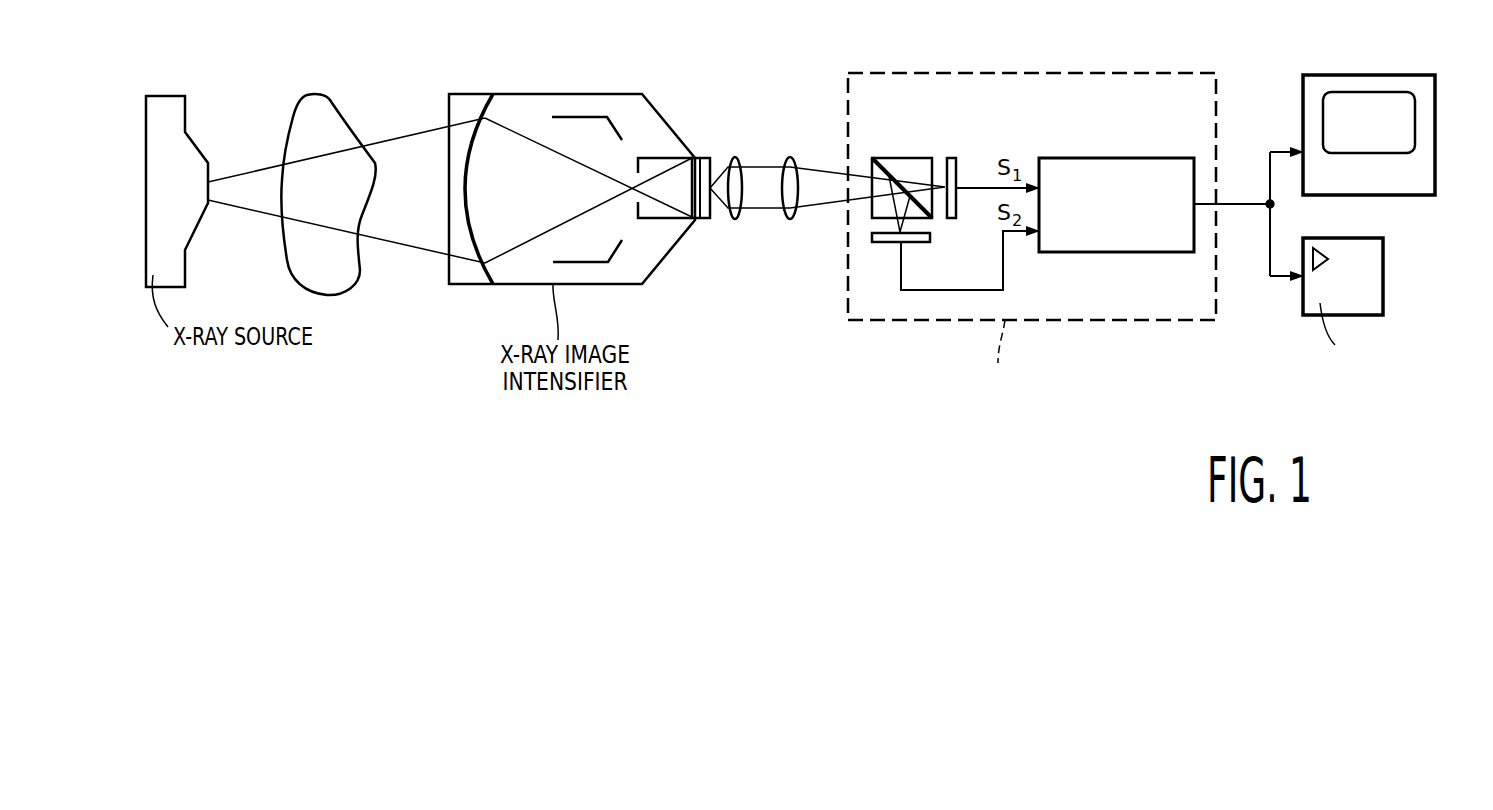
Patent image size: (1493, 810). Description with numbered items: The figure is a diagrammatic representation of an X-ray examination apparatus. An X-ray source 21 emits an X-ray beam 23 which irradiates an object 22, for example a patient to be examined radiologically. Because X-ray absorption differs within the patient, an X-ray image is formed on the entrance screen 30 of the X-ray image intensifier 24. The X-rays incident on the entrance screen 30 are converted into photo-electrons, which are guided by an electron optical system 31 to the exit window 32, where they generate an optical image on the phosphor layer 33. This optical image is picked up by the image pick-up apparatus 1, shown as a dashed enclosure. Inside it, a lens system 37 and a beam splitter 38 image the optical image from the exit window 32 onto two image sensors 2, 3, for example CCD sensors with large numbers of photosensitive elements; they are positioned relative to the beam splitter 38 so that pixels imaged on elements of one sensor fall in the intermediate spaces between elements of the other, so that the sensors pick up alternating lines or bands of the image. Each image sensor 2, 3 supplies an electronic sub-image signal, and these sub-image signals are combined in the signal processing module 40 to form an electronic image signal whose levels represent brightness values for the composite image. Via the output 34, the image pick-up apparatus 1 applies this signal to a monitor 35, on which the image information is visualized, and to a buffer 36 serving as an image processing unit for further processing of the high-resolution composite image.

The image pick-up apparatus 1 is at (1033, 73).
The image sensor 2 is at (948, 157).
The image sensor 3 is at (932, 238).
The X-ray source 21 is at (162, 103).
The object 22 is at (307, 105).
The X-ray beam 23 is at (240, 173).
The X-ray image intensifier 24 is at (555, 93).
The entrance screen 30 is at (468, 187).
The electron optical system 31 is at (622, 242).
The exit window 32 is at (703, 160).
The phosphor layer 33 is at (695, 220).
The output 34 is at (1197, 207).
The monitor 35 is at (1430, 113).
The buffer 36 is at (1377, 260).
The lens system 37 is at (827, 173).
The beam splitter 38 is at (907, 163).
The signal processing module 40 is at (1132, 167).